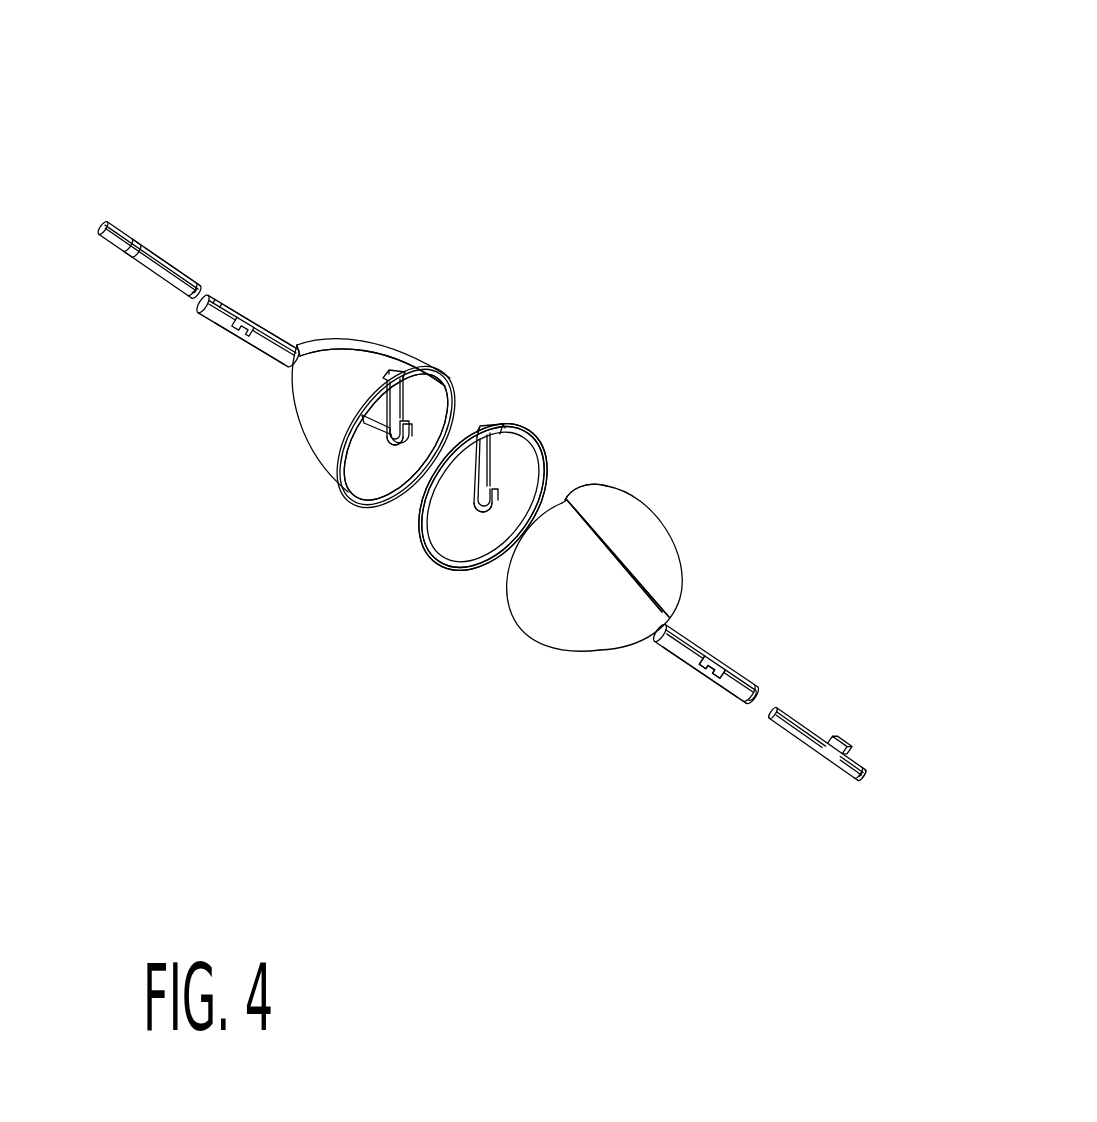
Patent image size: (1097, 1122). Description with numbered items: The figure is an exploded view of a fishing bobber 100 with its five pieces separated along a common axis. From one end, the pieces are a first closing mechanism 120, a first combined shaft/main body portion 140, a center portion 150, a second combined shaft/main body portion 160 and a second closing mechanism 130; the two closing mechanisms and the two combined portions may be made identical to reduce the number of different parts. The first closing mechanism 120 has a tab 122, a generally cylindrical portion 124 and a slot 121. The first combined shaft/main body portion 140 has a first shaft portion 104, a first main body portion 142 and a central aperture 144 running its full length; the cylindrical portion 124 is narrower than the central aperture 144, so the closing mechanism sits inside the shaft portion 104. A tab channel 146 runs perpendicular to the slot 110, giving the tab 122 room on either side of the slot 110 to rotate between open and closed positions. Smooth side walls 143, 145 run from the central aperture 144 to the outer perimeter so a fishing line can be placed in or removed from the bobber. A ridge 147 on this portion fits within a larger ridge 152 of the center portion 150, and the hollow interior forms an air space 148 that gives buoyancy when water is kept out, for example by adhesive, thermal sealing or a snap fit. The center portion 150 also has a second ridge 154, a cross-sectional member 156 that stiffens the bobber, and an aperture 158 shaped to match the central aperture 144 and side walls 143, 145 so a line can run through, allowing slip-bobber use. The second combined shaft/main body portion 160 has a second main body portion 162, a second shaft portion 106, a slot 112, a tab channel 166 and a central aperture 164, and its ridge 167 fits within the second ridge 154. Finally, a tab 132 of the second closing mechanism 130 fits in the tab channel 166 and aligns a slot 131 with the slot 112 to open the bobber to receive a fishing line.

The bobber 100 is at (385, 788).
The first shaft portion 104 is at (262, 352).
The second shaft portion 106 is at (685, 663).
The slot 110 is at (266, 332).
The slot 112 is at (668, 522).
The first closing mechanism 120 is at (124, 217).
The slot 121 is at (190, 270).
The tab 122 is at (132, 257).
The generally cylindrical portion 124 is at (168, 288).
The second closing mechanism 130 is at (798, 706).
The slot 131 is at (862, 783).
The tab 132 is at (830, 727).
The first combined shaft/main body portion 140 is at (333, 337).
The first main body portion 142 is at (380, 347).
The side wall 143 is at (385, 420).
The central aperture 144 is at (398, 440).
The side wall 145 is at (398, 393).
The tab channel 146 is at (255, 298).
The ridge 147 is at (395, 432).
The air space 148 is at (425, 395).
The center portion 150 is at (418, 553).
The ridge 152 is at (497, 423).
The second ridge 154 is at (541, 423).
The cross-sectional member 156 is at (542, 443).
The aperture 158 is at (489, 495).
The second combined shaft/main body portion 160 is at (632, 560).
The second main body portion 162 is at (642, 513).
The central aperture 164 is at (762, 685).
The tab channel 166 is at (723, 653).
The ridge 167 is at (615, 505).